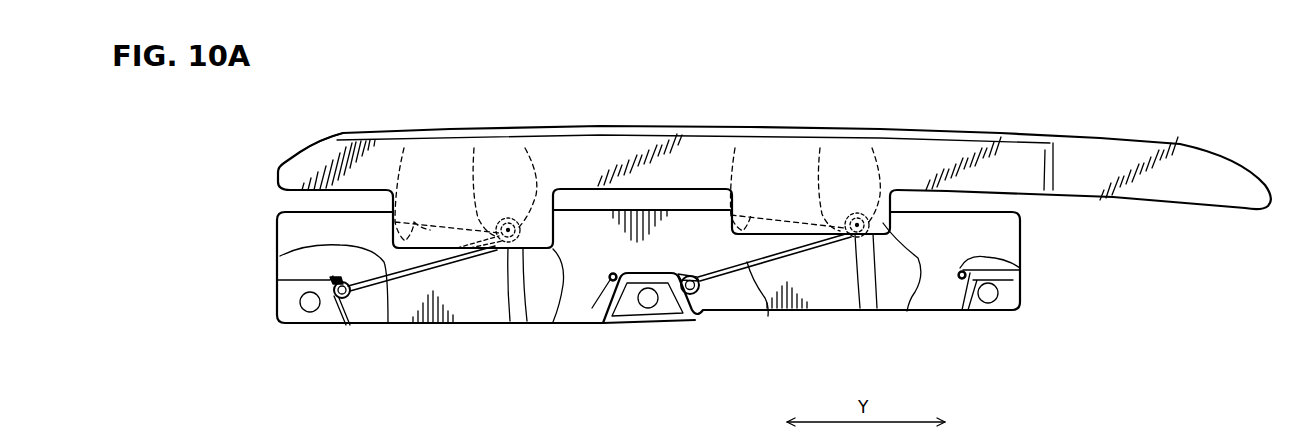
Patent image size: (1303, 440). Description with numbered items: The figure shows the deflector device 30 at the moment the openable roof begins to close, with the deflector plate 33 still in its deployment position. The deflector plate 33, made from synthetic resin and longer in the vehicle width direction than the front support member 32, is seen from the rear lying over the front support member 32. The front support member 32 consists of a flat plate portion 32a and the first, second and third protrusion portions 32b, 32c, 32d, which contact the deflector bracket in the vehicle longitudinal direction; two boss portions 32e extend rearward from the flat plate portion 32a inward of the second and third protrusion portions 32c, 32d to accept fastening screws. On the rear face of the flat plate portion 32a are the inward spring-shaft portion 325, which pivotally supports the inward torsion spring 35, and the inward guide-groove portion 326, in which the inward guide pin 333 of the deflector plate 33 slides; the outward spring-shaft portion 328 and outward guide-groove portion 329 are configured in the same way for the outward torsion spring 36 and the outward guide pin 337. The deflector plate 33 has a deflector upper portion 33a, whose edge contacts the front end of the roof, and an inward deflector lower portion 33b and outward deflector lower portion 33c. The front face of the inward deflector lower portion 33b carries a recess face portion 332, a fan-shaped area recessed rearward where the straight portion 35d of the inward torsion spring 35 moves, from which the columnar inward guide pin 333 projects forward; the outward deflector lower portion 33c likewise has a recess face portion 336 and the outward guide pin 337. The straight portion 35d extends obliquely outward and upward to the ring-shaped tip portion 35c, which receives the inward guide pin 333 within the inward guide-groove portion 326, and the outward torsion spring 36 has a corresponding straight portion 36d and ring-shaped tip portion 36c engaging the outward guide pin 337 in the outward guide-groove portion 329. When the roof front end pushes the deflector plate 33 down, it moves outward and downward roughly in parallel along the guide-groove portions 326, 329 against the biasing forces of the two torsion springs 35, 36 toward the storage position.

The deflector device 30 is at (323, 80).
The front support member 32 is at (1024, 243).
The flat plate portion 32a is at (293, 230).
The first protrusion portion 32b is at (297, 313).
The second protrusion portion 32c is at (670, 318).
The third protrusion portion 32d is at (1013, 306).
The boss portion 32e is at (599, 300).
The deflector plate 33 is at (1089, 132).
The deflector upper portion 33a is at (304, 162).
The inward deflector lower portion 33b is at (552, 322).
The outward deflector lower portion 33c is at (907, 311).
The inward torsion spring 35 is at (368, 283).
The ring-shaped tip portion 35c is at (525, 148).
The straight portion 35d is at (280, 256).
The outward torsion spring 36 is at (721, 277).
The ring-shaped tip portion 36c is at (872, 148).
The straight portion 36d is at (768, 316).
The inward spring-shaft portion 325 is at (352, 300).
The inward guide-groove portion 326 is at (516, 318).
The outward spring-shaft portion 328 is at (702, 313).
The outward guide-groove portion 329 is at (868, 302).
The recess face portion 332 is at (404, 148).
The inward guide pin 333 is at (474, 148).
The recess face portion 336 is at (735, 148).
The outward guide pin 337 is at (820, 148).